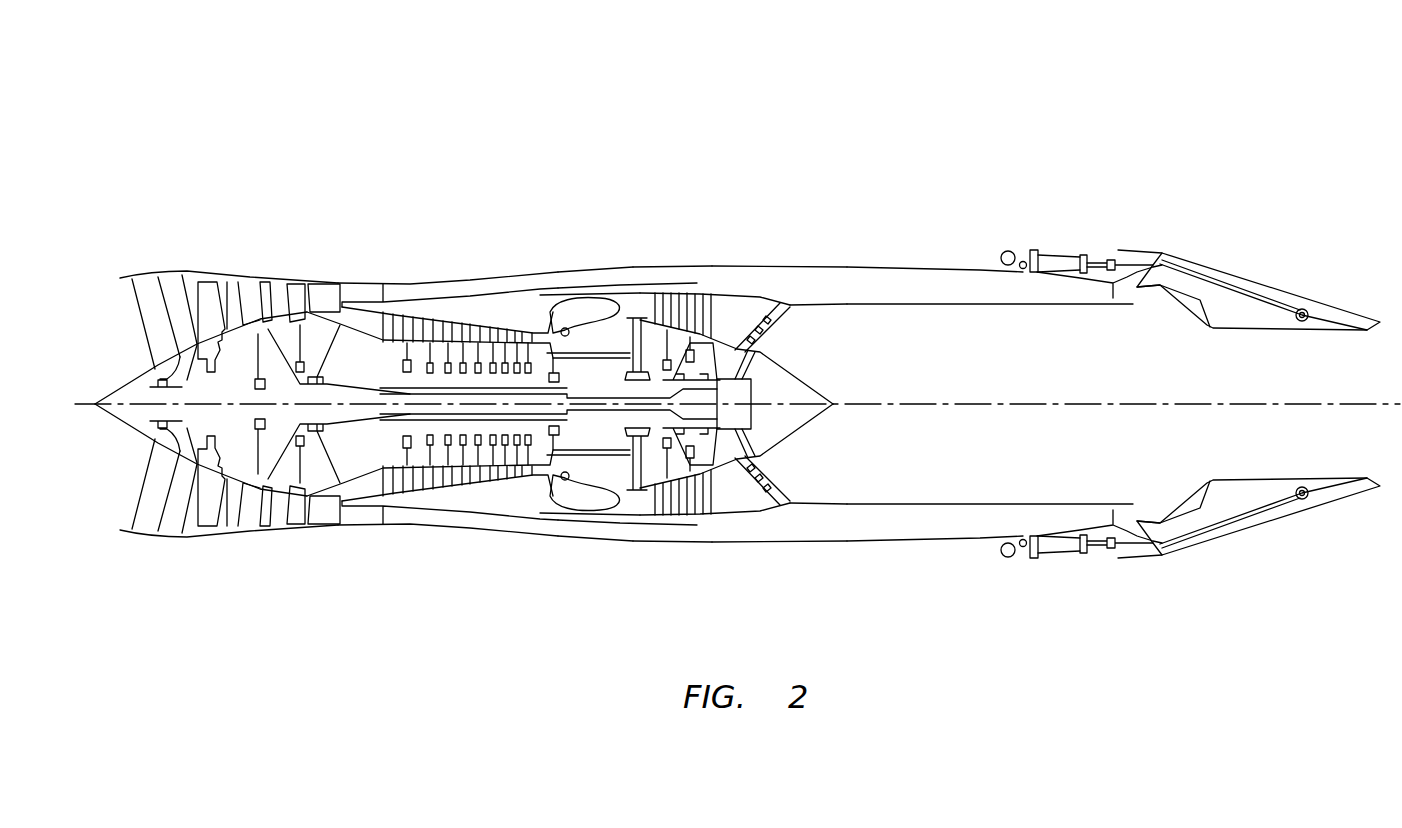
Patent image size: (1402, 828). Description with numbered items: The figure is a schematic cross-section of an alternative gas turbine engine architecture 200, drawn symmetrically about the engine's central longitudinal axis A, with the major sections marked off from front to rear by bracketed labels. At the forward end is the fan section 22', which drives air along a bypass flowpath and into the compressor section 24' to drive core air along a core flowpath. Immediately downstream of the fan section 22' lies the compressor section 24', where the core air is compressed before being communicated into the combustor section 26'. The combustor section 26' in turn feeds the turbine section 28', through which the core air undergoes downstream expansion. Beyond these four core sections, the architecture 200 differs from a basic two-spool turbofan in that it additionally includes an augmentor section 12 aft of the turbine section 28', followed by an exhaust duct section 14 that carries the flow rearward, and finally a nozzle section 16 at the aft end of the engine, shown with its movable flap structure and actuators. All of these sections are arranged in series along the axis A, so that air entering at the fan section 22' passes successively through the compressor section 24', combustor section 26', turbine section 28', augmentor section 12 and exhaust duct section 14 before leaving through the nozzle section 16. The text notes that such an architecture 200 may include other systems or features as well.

The engine architecture 200 is at (1034, 98).
The fan section 22' is at (252, 342).
The compressor section 24' is at (512, 341).
The combustor section 26' is at (618, 344).
The turbine section 28' is at (707, 344).
The augmentor section 12 is at (847, 205).
The exhaust duct section 14 is at (1123, 205).
The nozzle section 16 is at (1380, 205).
The engine central longitudinal axis A is at (1115, 404).